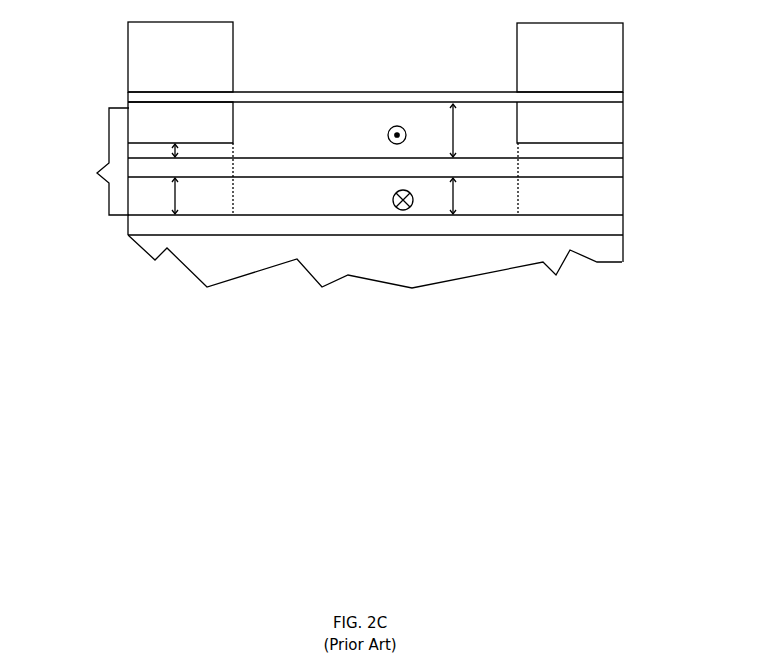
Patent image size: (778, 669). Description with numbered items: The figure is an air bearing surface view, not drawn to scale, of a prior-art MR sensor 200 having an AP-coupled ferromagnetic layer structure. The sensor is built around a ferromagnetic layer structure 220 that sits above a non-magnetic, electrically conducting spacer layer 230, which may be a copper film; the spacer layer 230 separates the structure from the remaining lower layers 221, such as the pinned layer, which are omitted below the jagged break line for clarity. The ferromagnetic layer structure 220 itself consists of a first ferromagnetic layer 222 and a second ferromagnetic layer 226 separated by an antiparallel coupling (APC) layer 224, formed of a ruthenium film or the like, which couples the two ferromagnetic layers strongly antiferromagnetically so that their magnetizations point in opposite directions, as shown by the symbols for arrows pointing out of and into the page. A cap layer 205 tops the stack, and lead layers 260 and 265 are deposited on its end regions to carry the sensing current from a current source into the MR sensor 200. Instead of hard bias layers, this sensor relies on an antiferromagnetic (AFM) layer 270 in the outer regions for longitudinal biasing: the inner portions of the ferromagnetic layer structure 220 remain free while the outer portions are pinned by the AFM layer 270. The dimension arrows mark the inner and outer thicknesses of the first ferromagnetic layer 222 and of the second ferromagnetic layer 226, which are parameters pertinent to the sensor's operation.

The MR sensor 200 is at (369, 200).
The cap layer 205 is at (500, 100).
The ferromagnetic layer structure 220 is at (96, 173).
The unillustrated lower layers 221 is at (503, 270).
The first ferromagnetic layer 222 is at (616, 197).
The antiparallel coupling (APC) layer 224 is at (610, 168).
The second ferromagnetic layer 226 is at (610, 149).
The spacer layer 230 is at (623, 226).
The lead layer 260 is at (128, 60).
The lead layer 265 is at (623, 60).
The antiferromagnetic (AFM) layer 270 is at (150, 120).